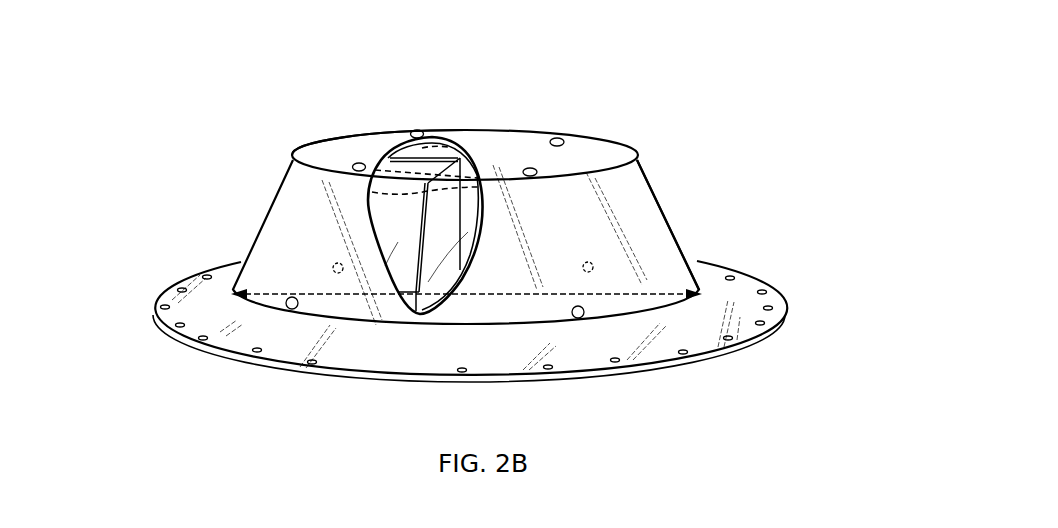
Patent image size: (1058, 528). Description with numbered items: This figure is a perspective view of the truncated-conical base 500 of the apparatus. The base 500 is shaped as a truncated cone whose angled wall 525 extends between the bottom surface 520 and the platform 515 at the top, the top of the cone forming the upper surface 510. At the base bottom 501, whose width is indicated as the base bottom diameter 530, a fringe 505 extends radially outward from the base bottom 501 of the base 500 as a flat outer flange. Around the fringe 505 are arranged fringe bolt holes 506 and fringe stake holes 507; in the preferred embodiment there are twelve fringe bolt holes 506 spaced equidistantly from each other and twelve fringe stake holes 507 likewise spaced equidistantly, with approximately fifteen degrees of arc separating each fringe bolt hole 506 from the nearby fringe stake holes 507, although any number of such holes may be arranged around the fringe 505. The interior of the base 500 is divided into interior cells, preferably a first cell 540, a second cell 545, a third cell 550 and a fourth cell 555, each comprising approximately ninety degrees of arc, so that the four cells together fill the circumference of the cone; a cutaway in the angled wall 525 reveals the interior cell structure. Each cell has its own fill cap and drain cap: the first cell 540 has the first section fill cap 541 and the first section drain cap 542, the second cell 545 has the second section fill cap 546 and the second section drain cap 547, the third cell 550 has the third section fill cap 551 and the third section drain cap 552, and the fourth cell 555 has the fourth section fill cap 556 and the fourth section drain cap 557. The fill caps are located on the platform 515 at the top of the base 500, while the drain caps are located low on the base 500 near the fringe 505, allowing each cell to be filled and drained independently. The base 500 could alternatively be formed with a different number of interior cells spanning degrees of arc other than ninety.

The base 500 is at (190, 80).
The base bottom 501 is at (520, 325).
The fringe 505 is at (737, 276).
The fringe bolt hole 506 is at (164, 303).
The fringe stake hole 507 is at (183, 287).
The upper surface 510 is at (578, 142).
The platform 515 is at (340, 150).
The bottom surface 520 is at (498, 322).
The angled wall 525 is at (665, 203).
The base bottom diameter 530 is at (291, 309).
The first cell 540 is at (417, 296).
The first section fill cap 541 is at (645, 163).
The first section drain cap 542 is at (586, 311).
The second cell 545 is at (398, 300).
The second section fill cap 546 is at (358, 163).
The second section drain cap 547 is at (332, 269).
The third cell 550 is at (433, 136).
The third section fill cap 551 is at (399, 137).
The third section drain cap 552 is at (152, 315).
The fourth cell 555 is at (478, 152).
The fourth section fill cap 556 is at (562, 142).
The fourth section drain cap 557 is at (598, 267).